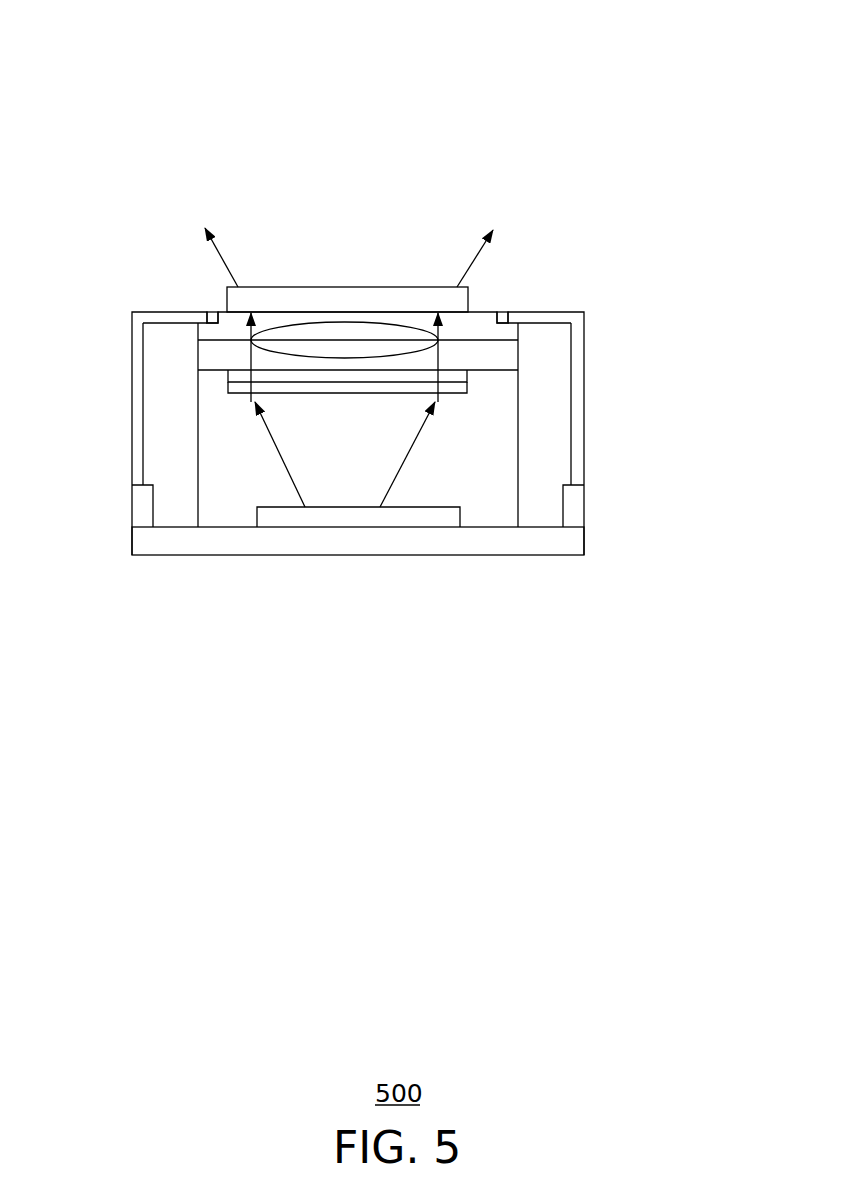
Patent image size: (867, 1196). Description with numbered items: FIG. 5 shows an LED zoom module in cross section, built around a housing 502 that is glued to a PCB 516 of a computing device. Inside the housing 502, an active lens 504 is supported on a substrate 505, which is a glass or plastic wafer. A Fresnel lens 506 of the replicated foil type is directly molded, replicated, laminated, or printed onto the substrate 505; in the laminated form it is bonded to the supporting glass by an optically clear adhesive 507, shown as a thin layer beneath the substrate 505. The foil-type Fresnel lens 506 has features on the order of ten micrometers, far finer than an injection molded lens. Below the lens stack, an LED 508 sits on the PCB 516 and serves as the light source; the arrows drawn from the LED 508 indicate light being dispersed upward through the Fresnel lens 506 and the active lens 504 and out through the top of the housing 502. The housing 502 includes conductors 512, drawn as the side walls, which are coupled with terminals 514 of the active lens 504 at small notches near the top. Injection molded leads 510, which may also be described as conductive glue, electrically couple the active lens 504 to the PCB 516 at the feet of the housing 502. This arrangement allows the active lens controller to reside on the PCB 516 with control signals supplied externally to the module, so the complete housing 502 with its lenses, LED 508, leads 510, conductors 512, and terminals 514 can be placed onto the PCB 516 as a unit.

The housing 502 is at (145, 85).
The active lens 504 is at (311, 312).
The substrate 505 is at (477, 358).
The Fresnel lens 506 is at (338, 395).
The optically clear adhesive 507 is at (302, 380).
The LED 508 is at (428, 512).
The injection molded leads 510 is at (142, 513).
The conductors 512 is at (131, 387).
The terminals 514 is at (205, 308).
The PCB 516 is at (380, 545).